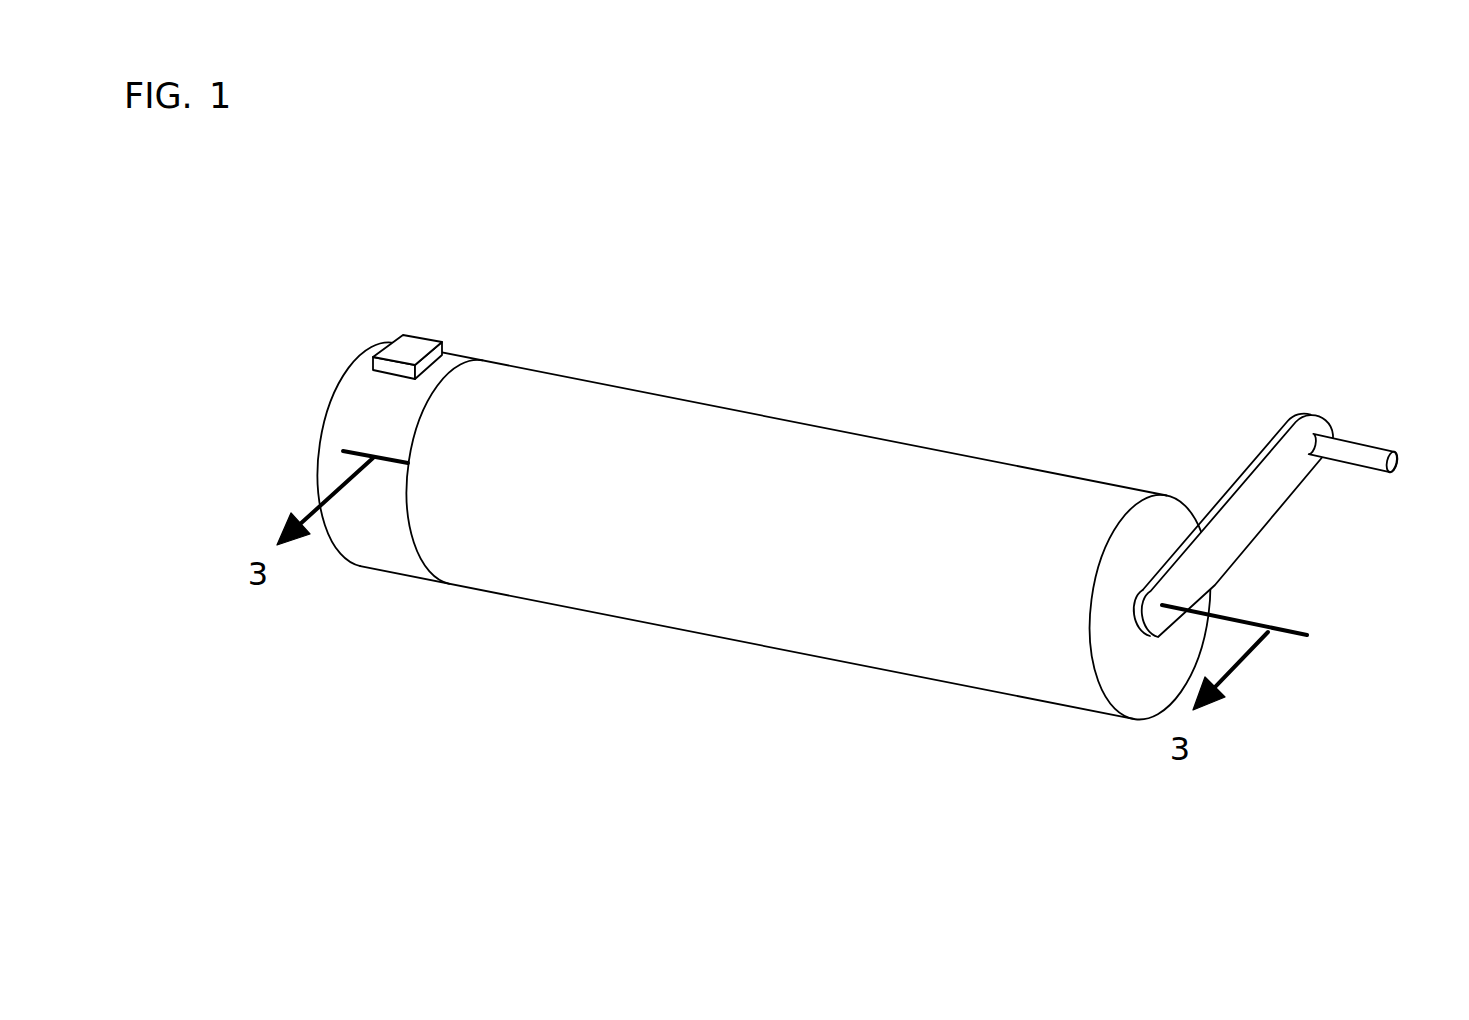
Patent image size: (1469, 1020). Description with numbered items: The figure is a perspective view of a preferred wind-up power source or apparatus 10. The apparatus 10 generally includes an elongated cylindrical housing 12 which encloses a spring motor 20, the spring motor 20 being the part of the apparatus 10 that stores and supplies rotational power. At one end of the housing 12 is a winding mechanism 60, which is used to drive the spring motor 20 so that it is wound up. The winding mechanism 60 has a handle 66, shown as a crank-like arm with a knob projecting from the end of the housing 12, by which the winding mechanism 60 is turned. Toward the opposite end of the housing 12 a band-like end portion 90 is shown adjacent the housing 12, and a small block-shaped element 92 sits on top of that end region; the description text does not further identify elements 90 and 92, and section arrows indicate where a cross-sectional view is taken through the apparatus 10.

The wind-up power source 10 is at (887, 523).
The housing 12 is at (817, 370).
The spring motor 20 is at (753, 580).
The winding mechanism 60 is at (1147, 683).
The handle 66 is at (1348, 447).
The end cap 90 is at (384, 508).
The button 92 is at (410, 347).